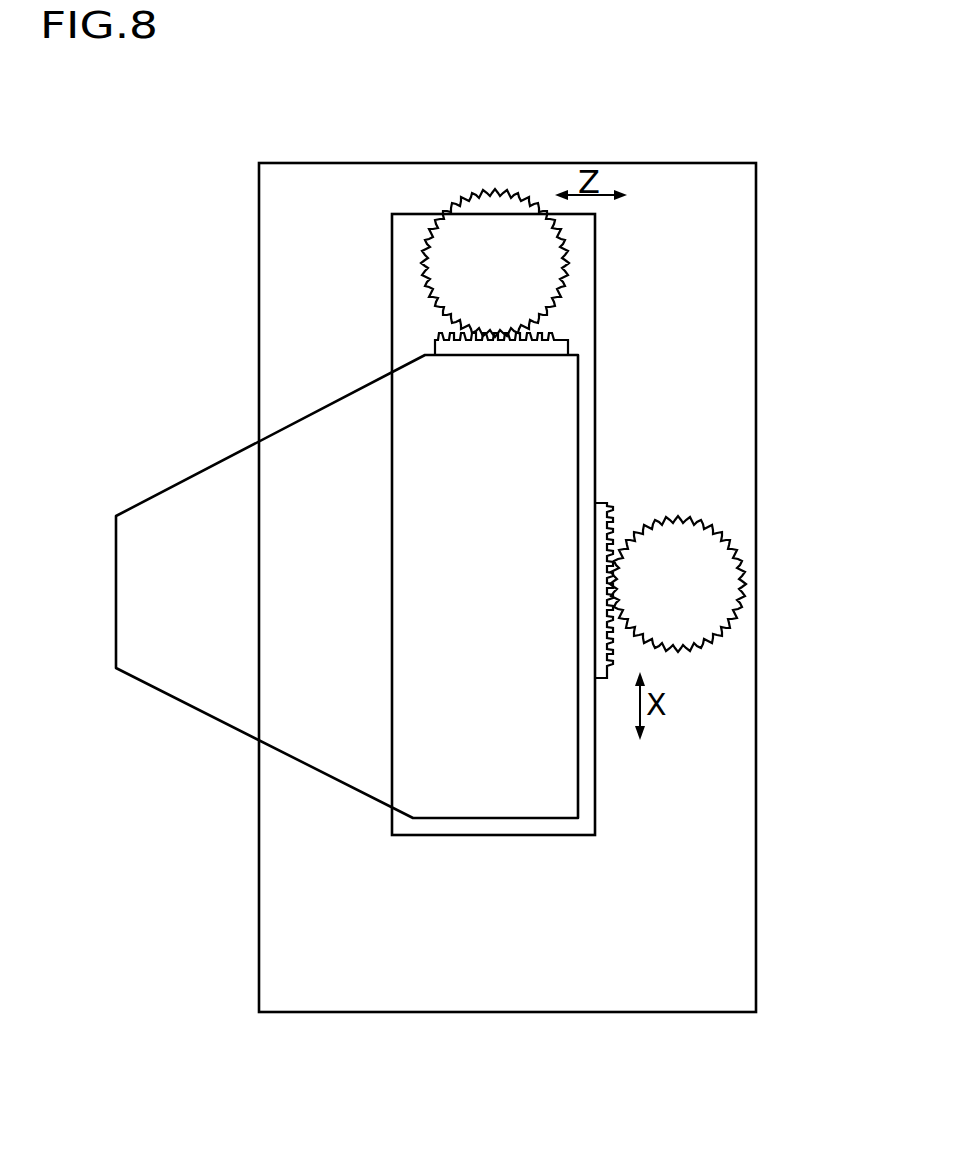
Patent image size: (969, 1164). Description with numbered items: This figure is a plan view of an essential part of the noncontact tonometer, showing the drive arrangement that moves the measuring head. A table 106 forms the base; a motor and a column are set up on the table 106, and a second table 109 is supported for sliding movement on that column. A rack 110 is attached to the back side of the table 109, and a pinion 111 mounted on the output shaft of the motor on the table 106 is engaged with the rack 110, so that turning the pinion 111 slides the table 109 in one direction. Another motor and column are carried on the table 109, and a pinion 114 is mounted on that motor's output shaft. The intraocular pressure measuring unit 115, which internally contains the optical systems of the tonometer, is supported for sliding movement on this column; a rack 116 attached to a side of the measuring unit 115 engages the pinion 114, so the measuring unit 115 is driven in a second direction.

The table 106 is at (735, 370).
The table 109 is at (565, 836).
The rack 110 is at (608, 505).
The pinion 111 is at (690, 550).
The pinion 114 is at (497, 220).
The intraocular pressure measuring unit 115 is at (495, 818).
The rack 116 is at (545, 333).